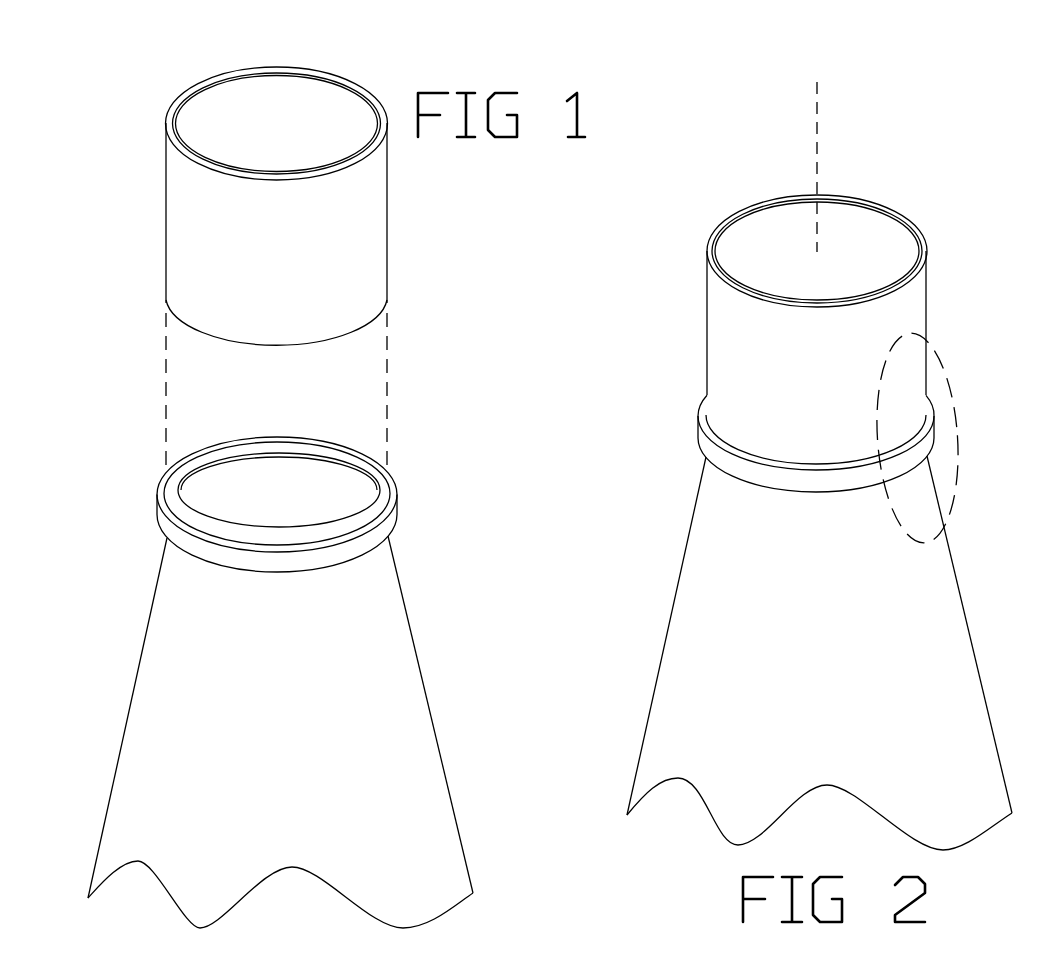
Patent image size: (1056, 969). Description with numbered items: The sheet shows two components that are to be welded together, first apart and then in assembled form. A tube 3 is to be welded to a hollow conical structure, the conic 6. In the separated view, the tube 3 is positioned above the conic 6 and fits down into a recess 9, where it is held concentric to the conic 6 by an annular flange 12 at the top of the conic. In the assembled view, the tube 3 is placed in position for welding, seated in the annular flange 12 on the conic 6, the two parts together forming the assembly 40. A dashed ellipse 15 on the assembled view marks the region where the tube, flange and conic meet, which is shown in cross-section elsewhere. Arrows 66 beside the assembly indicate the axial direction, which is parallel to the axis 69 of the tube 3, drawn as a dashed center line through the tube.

In FIG. 1, the tube 3 is at (387, 212).
In FIG. 2, the tube 3 is at (926, 290).
In FIG. 1, the conic 6 is at (432, 710).
In FIG. 2, the conic 6 is at (968, 625).
In FIG. 1, the recess 9 is at (362, 418).
In FIG. 1, the annular flange 12 is at (397, 507).
In FIG. 2, the annular flange 12 is at (773, 443).
In FIG. 2, the dashed ellipse 15 is at (955, 428).
In FIG. 2, the assembly 40 is at (851, 155).
In FIG. 2, the arrows 66 is at (658, 355).
In FIG. 2, the axis 69 is at (813, 142).